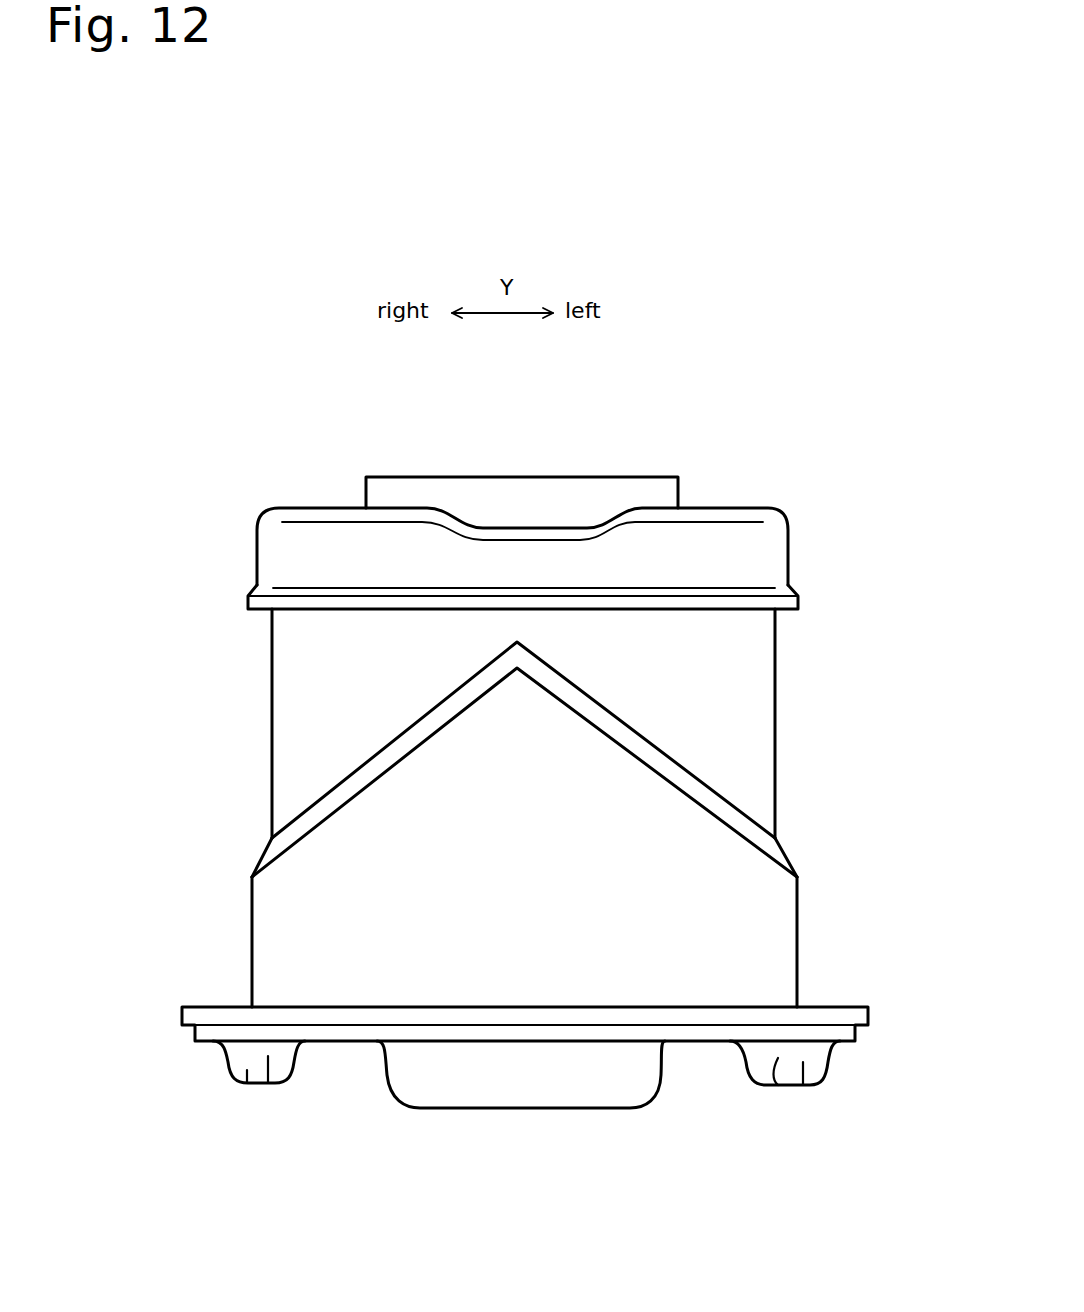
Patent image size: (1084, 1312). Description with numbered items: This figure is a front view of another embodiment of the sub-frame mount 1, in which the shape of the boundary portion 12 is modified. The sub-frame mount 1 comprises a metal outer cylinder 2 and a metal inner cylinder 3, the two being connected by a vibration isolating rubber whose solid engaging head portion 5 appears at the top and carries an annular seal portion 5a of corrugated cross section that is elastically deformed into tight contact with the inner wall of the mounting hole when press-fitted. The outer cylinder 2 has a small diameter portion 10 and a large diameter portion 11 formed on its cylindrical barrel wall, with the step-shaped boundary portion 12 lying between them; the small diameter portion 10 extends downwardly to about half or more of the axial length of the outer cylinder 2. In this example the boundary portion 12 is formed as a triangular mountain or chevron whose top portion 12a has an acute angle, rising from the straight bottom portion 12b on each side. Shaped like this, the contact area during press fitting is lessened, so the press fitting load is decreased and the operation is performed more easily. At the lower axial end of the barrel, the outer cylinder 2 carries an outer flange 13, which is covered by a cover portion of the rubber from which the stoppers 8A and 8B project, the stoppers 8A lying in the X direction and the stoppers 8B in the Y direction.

The sub-frame mount 1 is at (221, 455).
The outer cylinder 2 is at (261, 633).
The inner cylinder 3 is at (660, 488).
The engaging head portion 5 is at (780, 556).
The seal portion 5a is at (770, 604).
The small diameter portion 10 is at (283, 698).
The large diameter portion 11 is at (287, 932).
The boundary portion 12 is at (667, 760).
The top portion 12a is at (528, 632).
The bottom portion 12b is at (797, 878).
The outer flange 13 is at (195, 1007).
The stopper 8A is at (473, 1093).
The stopper 8B is at (247, 1072).